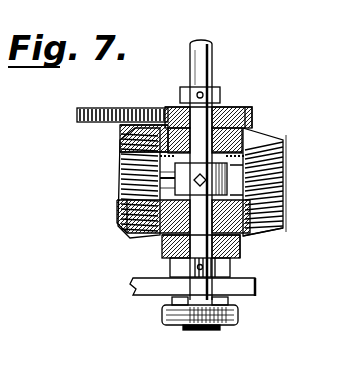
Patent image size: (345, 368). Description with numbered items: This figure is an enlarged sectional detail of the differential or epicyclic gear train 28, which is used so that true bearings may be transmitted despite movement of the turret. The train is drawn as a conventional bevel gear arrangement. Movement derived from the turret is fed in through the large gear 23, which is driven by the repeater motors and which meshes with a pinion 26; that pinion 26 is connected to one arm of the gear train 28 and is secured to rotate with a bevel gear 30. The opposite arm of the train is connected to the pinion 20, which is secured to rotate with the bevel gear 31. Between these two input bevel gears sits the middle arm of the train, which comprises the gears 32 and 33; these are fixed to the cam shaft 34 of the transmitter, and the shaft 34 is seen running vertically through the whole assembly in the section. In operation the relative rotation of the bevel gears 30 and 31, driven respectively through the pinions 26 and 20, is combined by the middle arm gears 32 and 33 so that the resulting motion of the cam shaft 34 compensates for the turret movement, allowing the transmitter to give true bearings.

The pinion 20 is at (240, 254).
The large gear 23 is at (90, 108).
The pinion 26 is at (243, 110).
The differential or epicyclic gear train 28 is at (285, 165).
The bevel gear 30 is at (274, 131).
The bevel gear 31 is at (130, 240).
The gear 32 is at (120, 186).
The gear 33 is at (283, 200).
The cam shaft 34 is at (214, 62).